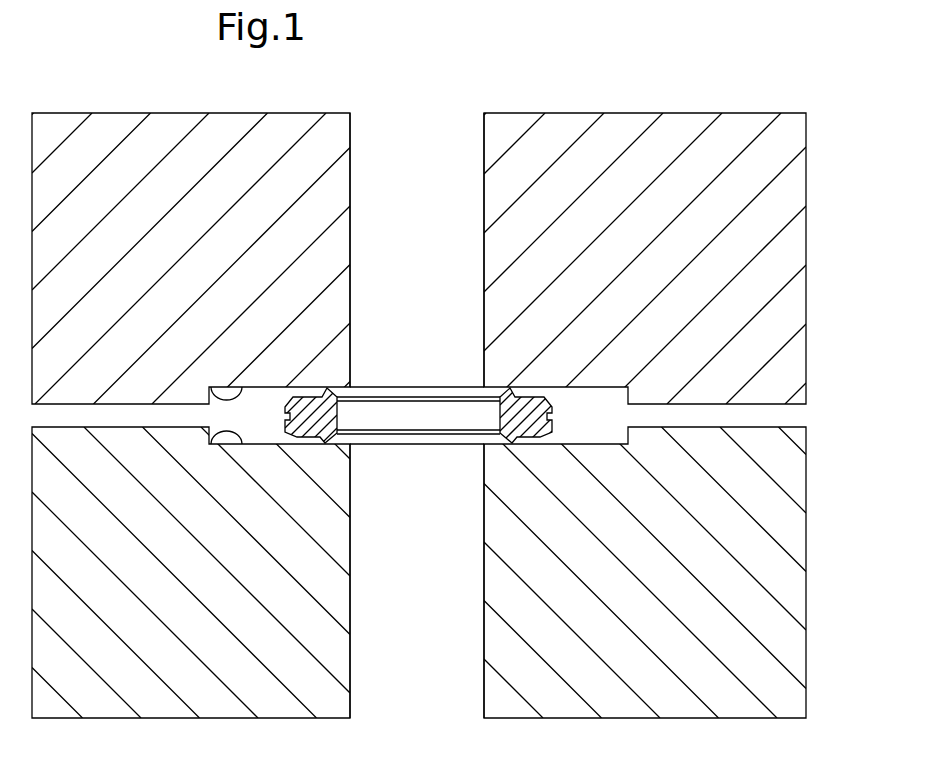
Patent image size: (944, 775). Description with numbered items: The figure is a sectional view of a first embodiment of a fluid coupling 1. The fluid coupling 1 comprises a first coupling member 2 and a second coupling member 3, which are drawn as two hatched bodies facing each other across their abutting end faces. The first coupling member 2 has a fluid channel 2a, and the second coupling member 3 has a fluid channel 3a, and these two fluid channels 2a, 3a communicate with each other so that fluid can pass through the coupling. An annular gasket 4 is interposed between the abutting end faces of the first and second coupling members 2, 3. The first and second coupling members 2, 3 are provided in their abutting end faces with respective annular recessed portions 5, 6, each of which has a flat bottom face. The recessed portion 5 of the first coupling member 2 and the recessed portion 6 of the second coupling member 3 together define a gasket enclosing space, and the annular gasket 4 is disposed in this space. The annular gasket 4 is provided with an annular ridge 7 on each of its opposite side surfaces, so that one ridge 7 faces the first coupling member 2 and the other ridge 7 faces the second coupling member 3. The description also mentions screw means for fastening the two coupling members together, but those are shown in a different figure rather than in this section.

The fluid coupling 1 is at (737, 107).
The first coupling member 2 is at (101, 142).
The fluid channel 2a is at (351, 138).
The second coupling member 3 is at (110, 697).
The fluid channel 3a is at (351, 704).
The annular gasket 4 is at (297, 397).
The annular recessed portion 5 is at (216, 390).
The annular recessed portion 6 is at (216, 445).
The annular ridge 7 is at (321, 390).